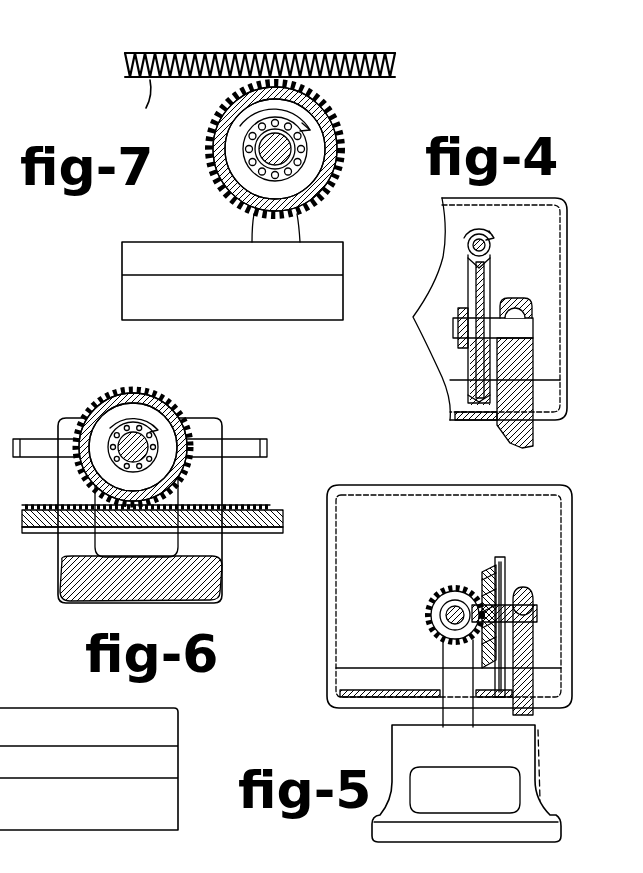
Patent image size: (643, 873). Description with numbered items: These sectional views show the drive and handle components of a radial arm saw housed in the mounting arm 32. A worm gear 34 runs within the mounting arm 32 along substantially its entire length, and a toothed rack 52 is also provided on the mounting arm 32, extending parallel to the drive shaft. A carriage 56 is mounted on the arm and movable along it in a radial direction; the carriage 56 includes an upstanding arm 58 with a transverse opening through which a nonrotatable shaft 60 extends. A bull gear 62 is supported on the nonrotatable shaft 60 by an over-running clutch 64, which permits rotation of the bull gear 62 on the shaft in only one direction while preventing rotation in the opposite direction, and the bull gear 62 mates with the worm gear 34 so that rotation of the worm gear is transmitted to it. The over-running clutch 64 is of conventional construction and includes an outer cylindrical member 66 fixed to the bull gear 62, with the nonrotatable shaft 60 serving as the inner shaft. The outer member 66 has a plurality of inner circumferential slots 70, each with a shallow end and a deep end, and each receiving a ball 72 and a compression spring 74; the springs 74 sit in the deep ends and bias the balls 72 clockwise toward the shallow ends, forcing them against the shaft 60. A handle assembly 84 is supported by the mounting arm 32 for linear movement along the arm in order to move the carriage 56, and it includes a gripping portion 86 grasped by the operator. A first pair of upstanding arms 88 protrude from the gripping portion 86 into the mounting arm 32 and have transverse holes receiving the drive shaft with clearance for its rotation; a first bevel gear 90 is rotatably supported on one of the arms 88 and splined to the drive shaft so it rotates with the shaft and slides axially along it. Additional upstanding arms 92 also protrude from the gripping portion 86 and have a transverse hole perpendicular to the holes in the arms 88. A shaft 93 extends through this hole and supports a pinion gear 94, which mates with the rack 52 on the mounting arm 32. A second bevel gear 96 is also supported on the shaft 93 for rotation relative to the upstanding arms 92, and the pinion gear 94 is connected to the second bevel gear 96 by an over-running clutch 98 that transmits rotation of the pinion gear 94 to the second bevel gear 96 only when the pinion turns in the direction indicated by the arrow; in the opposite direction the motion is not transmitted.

In FIG. 4, the mounting arm 32 is at (548, 218).
In FIG. 5, the mounting arm 32 is at (548, 506).
In FIG. 7, the worm gear 34 is at (146, 96).
In FIG. 4, the worm gear 34 is at (491, 250).
In FIG. 5, the toothed rack 52 is at (475, 690).
In FIG. 7, the carriage 56 is at (150, 232).
In FIG. 7, the upstanding arm 58 is at (300, 229).
In FIG. 4, the upstanding arm 58 is at (527, 372).
In FIG. 7, the nonrotatable shaft 60 is at (345, 117).
In FIG. 4, the nonrotatable shaft 60 is at (535, 326).
In FIG. 7, the bull gear 62 is at (212, 112).
In FIG. 4, the bull gear 62 is at (468, 288).
In FIG. 7, the over-running clutch 64 is at (240, 145).
In FIG. 4, the over-running clutch 64 is at (492, 292).
In FIG. 7, the outer cylindrical member 66 is at (275, 168).
In FIG. 7, the inner circumferential slots 70 is at (290, 160).
In FIG. 7, the ball 72 is at (304, 152).
In FIG. 7, the compression spring 74 is at (300, 131).
In FIG. 6, the handle assembly 84 is at (233, 584).
In FIG. 5, the handle assembly 84 is at (566, 773).
In FIG. 5, the gripping portion 86 is at (466, 820).
In FIG. 5, the first pair of upstanding arms 88 is at (443, 684).
In FIG. 5, the first bevel gear 90 is at (432, 640).
In FIG. 6, the additional upstanding arms 92 is at (208, 485).
In FIG. 5, the additional upstanding arms 92 is at (540, 700).
In FIG. 6, the shaft 93 is at (160, 445).
In FIG. 5, the shaft 93 is at (538, 612).
In FIG. 6, the pinion gear 94 is at (155, 397).
In FIG. 5, the pinion gear 94 is at (508, 563).
In FIG. 6, the second bevel gear 96 is at (118, 470).
In FIG. 5, the second bevel gear 96 is at (484, 575).
In FIG. 6, the over-running clutch 98 is at (105, 423).
In FIG. 5, the over-running clutch 98 is at (512, 580).